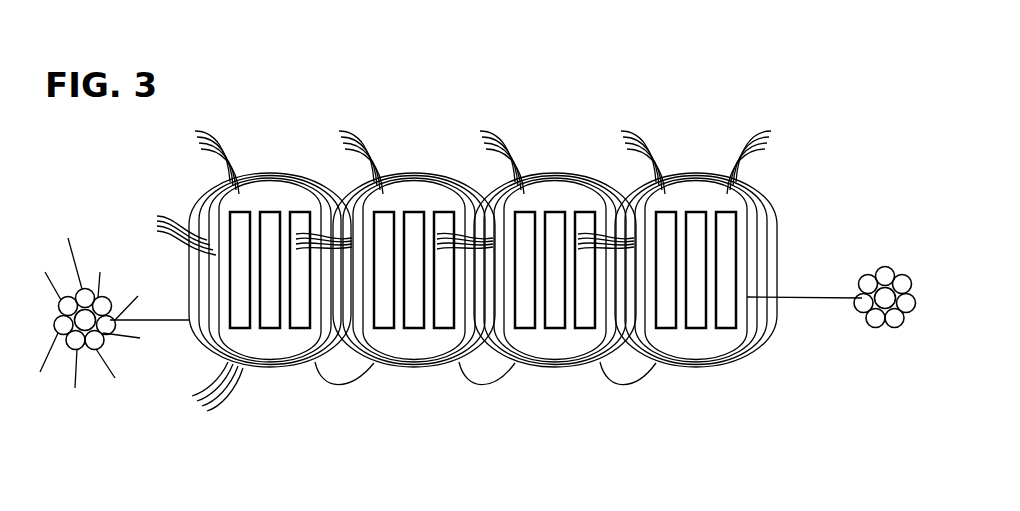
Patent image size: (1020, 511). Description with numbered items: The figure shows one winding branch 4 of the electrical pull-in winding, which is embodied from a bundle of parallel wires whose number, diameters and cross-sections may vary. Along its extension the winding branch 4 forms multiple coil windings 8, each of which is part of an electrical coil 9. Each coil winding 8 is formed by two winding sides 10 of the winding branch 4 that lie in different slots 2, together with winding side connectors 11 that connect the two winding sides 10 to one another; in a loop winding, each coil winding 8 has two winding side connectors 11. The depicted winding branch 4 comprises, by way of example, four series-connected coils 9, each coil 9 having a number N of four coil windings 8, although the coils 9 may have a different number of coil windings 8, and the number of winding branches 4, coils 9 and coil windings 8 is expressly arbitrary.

The slot 2 is at (483, 270).
The winding branch 4 is at (249, 112).
The coil winding 8 is at (420, 158).
The coil 9 is at (270, 392).
The winding side 10 is at (381, 233).
The winding side connector 11 is at (488, 274).